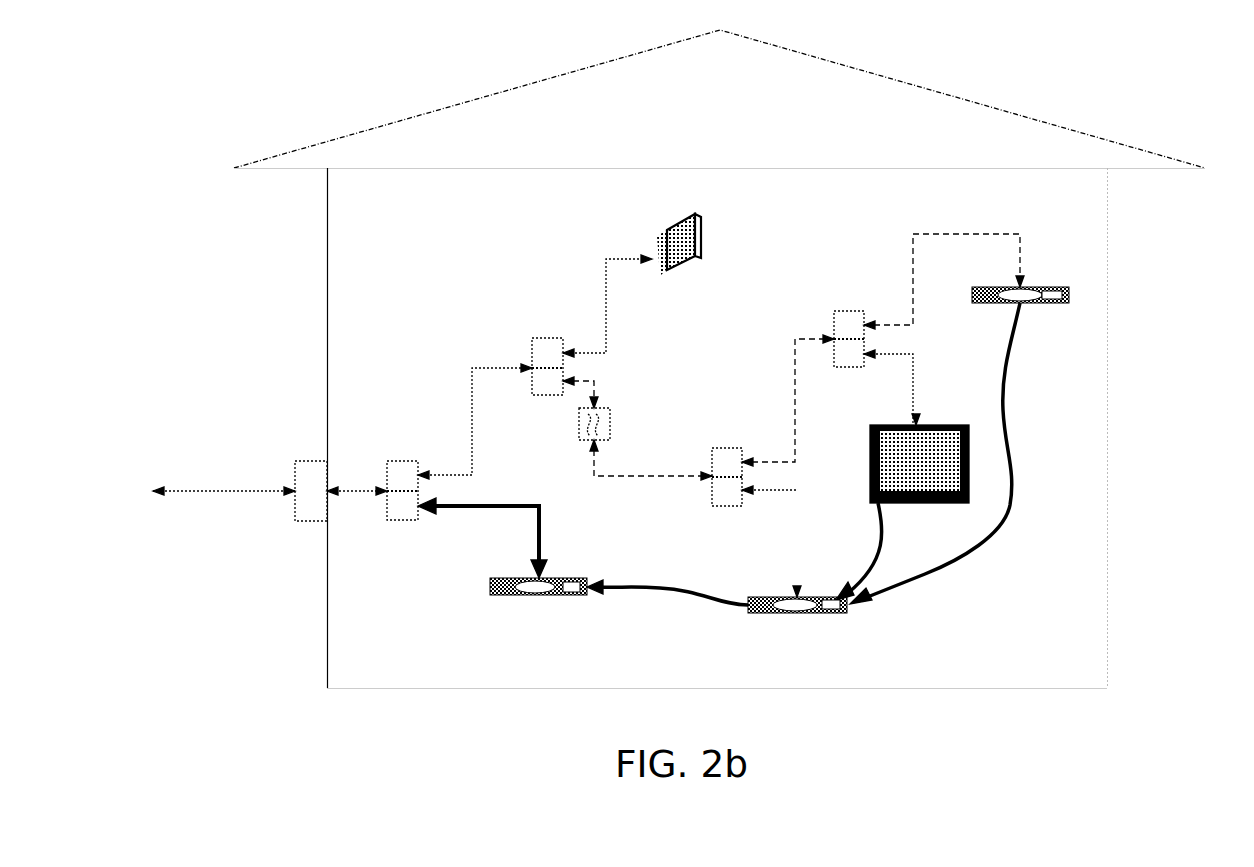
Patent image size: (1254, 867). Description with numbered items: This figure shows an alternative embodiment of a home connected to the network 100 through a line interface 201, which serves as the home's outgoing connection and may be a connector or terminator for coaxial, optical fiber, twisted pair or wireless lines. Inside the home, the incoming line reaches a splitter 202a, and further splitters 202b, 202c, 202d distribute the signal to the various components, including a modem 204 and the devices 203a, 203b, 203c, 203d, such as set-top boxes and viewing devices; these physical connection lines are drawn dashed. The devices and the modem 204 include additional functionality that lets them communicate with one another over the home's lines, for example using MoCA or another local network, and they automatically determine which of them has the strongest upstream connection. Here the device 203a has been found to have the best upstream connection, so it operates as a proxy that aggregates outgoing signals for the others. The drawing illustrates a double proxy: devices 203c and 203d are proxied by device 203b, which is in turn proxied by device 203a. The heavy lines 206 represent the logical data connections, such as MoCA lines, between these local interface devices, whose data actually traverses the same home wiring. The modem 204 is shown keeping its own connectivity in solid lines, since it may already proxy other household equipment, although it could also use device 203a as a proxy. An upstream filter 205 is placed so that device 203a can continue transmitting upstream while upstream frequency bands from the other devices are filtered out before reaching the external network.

The network 100 is at (514, 87).
The line interface 201 is at (289, 460).
The splitter 202a is at (406, 521).
The splitter 202b is at (532, 338).
The splitter 202c is at (726, 448).
The splitter 202d is at (848, 311).
The set-top box 203a is at (487, 580).
The viewing device 203b is at (761, 614).
The viewing device 203c is at (890, 425).
The viewing device 203d is at (985, 305).
The modem 204 is at (675, 218).
The upstream filter 205 is at (579, 424).
The lines 206 is at (977, 535).